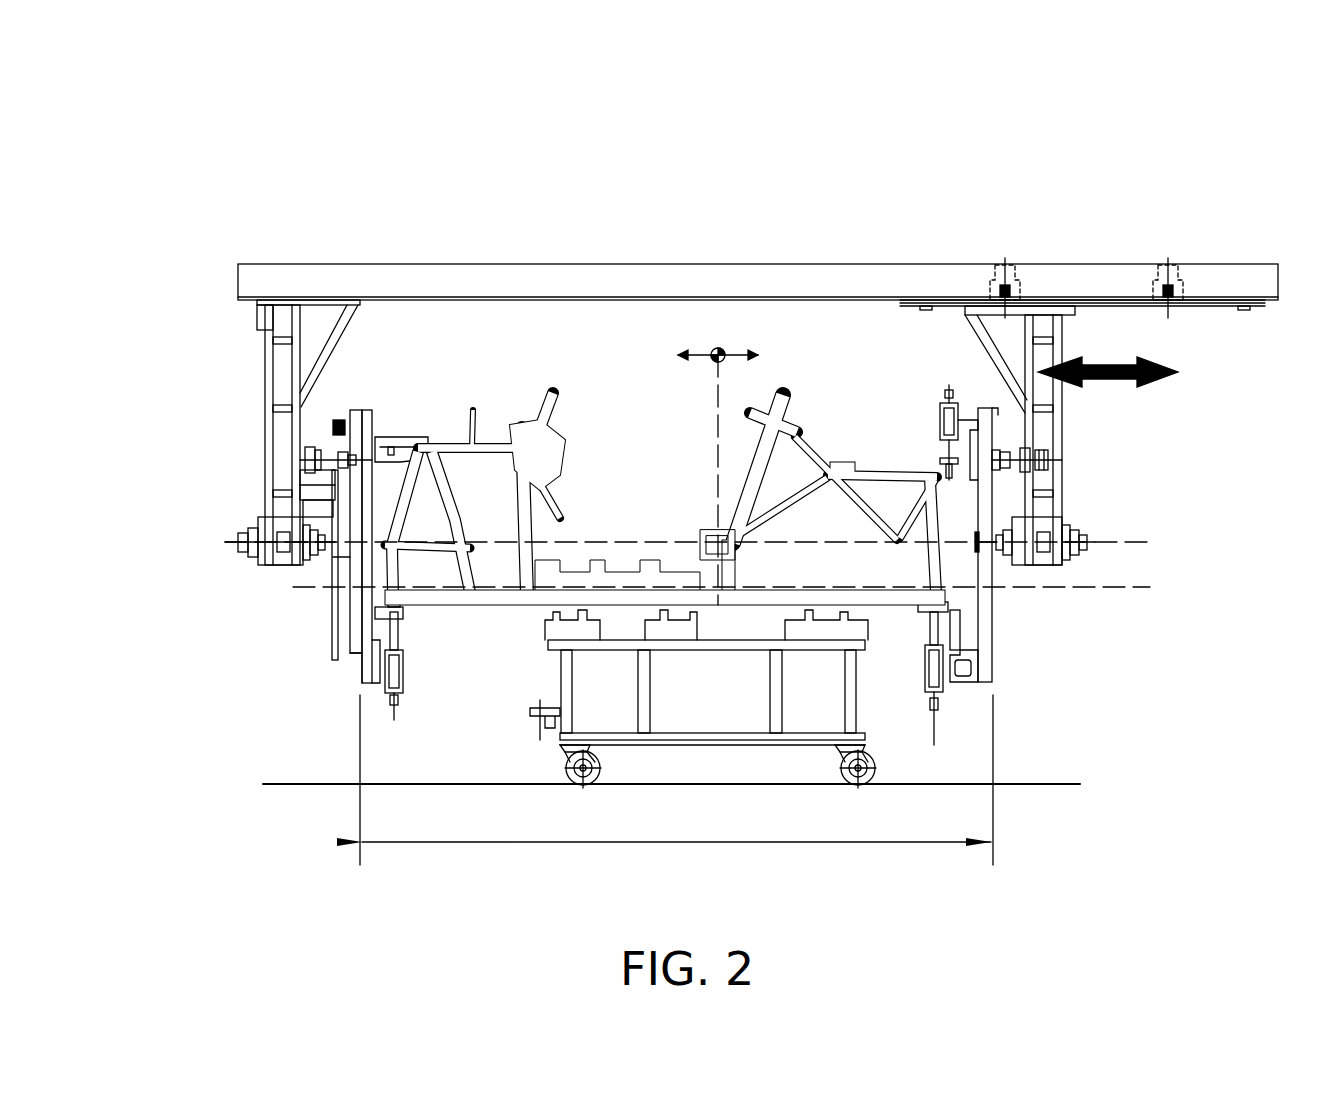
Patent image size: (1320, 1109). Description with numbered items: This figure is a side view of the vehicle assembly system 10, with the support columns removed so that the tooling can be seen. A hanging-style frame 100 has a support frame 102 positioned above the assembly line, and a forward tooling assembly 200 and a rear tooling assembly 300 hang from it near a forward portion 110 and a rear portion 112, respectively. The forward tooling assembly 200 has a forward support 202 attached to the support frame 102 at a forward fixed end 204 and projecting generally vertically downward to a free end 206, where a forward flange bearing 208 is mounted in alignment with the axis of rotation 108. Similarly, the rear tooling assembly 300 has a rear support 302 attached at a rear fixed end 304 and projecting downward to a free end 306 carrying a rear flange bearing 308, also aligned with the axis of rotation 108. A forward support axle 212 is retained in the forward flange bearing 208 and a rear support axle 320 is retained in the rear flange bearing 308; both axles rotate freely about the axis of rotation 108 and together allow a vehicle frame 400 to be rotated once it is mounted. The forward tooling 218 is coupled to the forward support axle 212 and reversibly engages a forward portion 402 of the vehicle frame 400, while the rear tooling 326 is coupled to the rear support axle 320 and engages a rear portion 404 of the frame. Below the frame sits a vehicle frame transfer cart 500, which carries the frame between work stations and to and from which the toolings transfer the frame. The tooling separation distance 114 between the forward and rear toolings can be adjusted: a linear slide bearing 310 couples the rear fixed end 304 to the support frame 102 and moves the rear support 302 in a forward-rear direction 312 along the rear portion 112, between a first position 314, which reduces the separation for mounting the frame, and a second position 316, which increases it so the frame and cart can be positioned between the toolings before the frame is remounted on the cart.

The vehicle assembly system 10 is at (212, 112).
The hanging-style frame 100 is at (758, 225).
The support frame 102 is at (761, 255).
The axis of rotation 108 is at (687, 476).
The forward portion 110 is at (180, 201).
The rear portion 112 is at (1243, 99).
The tooling separation distance 114 is at (676, 803).
The forward tooling assembly 200 is at (299, 508).
The forward support 202 is at (223, 435).
The forward fixed end 204 is at (251, 351).
The free end 206 is at (249, 564).
The forward flange bearing 208 is at (243, 530).
The forward support axle 212 is at (264, 489).
The forward tooling 218 is at (429, 397).
The rear tooling assembly 300 is at (1047, 522).
The rear support 302 is at (1094, 440).
The rear fixed end 304 is at (1064, 359).
The free end 306 is at (1097, 515).
The rear flange bearing 308 is at (1088, 535).
The linear slide bearing 310 is at (1084, 323).
The forward-rear direction 312 is at (1161, 389).
The first position 314 is at (960, 242).
The second position 316 is at (1138, 240).
The rear support axle 320 is at (1110, 518).
The rear tooling 326 is at (894, 396).
The vehicle frame 400 is at (665, 478).
The forward portion 402 is at (542, 473).
The rear portion 404 is at (829, 496).
The vehicle frame transfer cart 500 is at (655, 699).